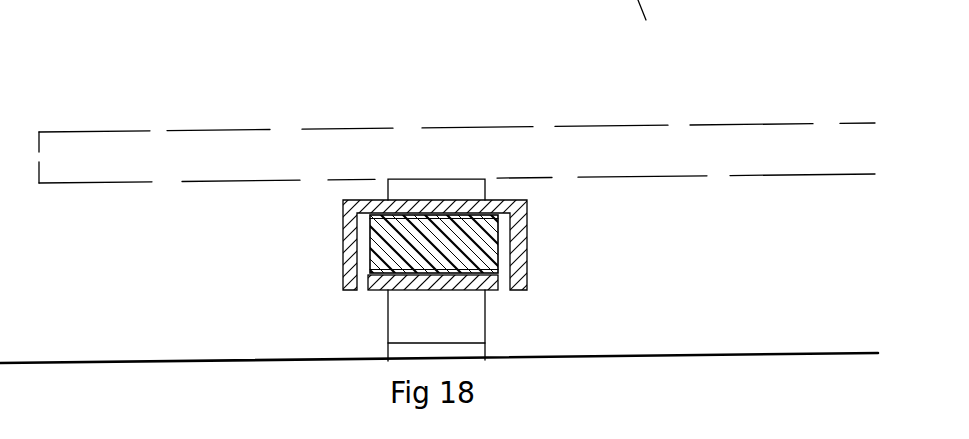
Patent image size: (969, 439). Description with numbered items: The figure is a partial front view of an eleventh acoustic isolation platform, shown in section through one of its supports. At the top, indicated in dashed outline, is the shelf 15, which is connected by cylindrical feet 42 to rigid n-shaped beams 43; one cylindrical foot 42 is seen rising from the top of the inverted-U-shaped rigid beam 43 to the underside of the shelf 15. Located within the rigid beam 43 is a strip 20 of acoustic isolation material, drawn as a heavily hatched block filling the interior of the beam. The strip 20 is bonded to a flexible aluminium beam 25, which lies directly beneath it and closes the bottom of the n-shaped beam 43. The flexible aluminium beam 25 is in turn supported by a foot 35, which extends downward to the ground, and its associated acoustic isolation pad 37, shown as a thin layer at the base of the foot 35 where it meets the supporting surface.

The shelf 15 is at (585, 147).
The strip of acoustic isolation material 20 is at (400, 246).
The flexible aluminium beam 25 is at (433, 283).
The foot 35 is at (402, 304).
The acoustic isolation pad 37 is at (402, 350).
The cylindrical foot 42 is at (473, 188).
The rigid n-shaped beam 43 is at (517, 244).